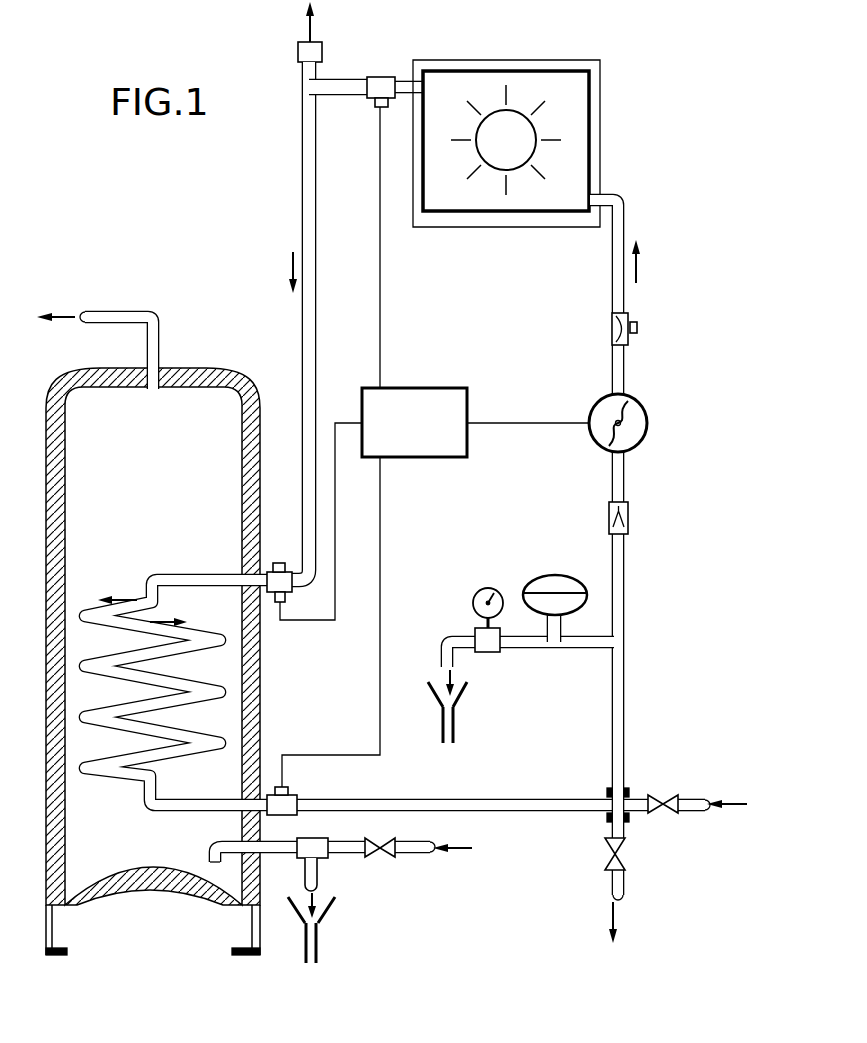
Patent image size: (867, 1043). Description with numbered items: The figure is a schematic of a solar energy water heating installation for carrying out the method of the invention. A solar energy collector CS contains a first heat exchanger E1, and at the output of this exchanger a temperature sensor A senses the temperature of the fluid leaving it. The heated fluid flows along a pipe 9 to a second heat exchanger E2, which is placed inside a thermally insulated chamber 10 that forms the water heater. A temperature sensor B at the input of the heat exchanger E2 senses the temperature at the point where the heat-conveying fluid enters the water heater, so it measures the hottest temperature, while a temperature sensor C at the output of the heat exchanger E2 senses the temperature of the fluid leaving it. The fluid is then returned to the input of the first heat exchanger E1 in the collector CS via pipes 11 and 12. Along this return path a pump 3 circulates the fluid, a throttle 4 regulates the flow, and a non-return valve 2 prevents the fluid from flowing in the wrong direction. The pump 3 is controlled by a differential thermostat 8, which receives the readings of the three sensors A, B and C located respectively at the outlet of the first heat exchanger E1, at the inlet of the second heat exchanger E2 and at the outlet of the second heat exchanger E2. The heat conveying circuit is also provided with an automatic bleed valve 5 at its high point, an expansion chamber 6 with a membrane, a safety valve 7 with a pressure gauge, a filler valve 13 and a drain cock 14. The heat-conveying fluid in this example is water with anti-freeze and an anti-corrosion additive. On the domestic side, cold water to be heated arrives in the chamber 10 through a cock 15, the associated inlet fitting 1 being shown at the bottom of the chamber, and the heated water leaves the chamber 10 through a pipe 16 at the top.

The drain fitting 1 is at (295, 858).
The non-return valve 2 is at (608, 520).
The pump 3 is at (596, 401).
The throttle 4 is at (611, 330).
The automatic bleed valve 5 is at (298, 51).
The expansion chamber 6 is at (548, 575).
The safety valve 7 is at (485, 587).
The differential thermostat 8 is at (428, 401).
The pipe 9 is at (316, 323).
The thermally insulated chamber 10 is at (252, 502).
The pipe 11 is at (508, 800).
The pipe 12 is at (620, 588).
The filler valve 13 is at (670, 795).
The drain cock 14 is at (607, 852).
The cock 15 is at (375, 855).
The pipe 16 is at (127, 312).
The temperature sensor A is at (385, 77).
The temperature sensor B is at (277, 571).
The temperature sensor C is at (283, 803).
The solar energy collector CS is at (602, 110).
The first heat exchanger E1 is at (590, 150).
The second heat exchanger E2 is at (135, 755).